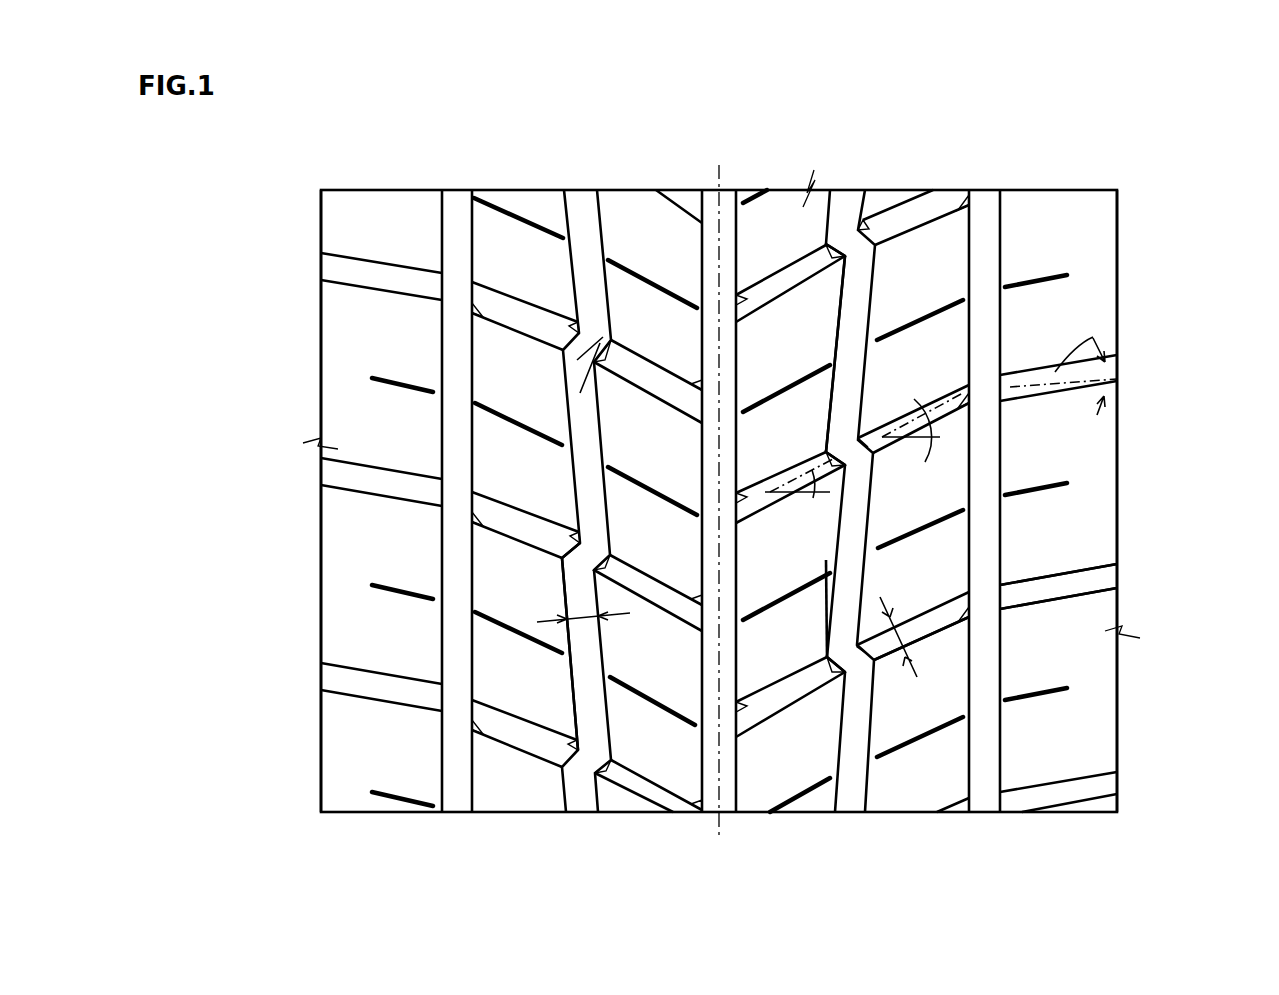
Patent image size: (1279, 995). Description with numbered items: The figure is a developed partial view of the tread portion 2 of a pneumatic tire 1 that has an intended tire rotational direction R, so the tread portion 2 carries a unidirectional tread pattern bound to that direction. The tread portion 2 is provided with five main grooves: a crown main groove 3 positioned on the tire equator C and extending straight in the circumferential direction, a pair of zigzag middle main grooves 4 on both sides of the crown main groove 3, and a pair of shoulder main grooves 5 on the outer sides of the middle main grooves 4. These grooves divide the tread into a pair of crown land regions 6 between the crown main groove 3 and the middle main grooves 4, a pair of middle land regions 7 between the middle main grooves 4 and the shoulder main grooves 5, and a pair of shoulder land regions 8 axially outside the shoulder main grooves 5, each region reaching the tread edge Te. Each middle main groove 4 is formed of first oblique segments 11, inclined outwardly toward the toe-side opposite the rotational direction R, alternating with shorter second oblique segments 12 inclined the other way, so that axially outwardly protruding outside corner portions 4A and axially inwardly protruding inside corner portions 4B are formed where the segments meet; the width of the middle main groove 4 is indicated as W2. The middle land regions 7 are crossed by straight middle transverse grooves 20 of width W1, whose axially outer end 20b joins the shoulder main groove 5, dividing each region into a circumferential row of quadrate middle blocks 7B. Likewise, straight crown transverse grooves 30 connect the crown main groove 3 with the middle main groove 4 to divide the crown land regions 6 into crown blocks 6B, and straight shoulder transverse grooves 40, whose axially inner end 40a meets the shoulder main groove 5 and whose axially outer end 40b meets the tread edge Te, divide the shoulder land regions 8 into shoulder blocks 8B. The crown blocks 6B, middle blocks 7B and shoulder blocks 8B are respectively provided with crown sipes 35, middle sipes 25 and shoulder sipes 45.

The pneumatic tire 1 is at (1101, 141).
The tread portion 2 is at (935, 151).
The crown main groove 3 is at (727, 217).
The middle main groove 4 is at (583, 218).
The outside corner portion 4A is at (865, 678).
The inside corner portion 4B is at (837, 641).
The shoulder main groove 5 is at (454, 217).
The crown land region 6 is at (676, 827).
The crown block 6B is at (632, 457).
The middle land region 7 is at (538, 827).
The middle block 7B is at (495, 390).
The shoulder land region 8 is at (370, 827).
The shoulder block 8B is at (362, 355).
The first oblique segment 11 is at (588, 703).
The second oblique segment 12 is at (587, 555).
The middle transverse groove 20 is at (517, 727).
The axially outer end of middle transverse groove 20b is at (969, 606).
The middle sipe 25 is at (516, 214).
The crown transverse groove 30 is at (622, 780).
The crown sipe 35 is at (650, 280).
The shoulder transverse groove 40 is at (377, 273).
The axially inner end of shoulder transverse groove 40a is at (987, 585).
The axially outer end of shoulder transverse groove 40b is at (1078, 606).
The shoulder sipe 45 is at (417, 383).
The tire equator C is at (717, 487).
The tire rotational direction R is at (295, 372).
The tread edge Te is at (320, 300).
The groove width of middle lateral groove W1 is at (914, 612).
The groove width of middle main groove W2 is at (583, 618).